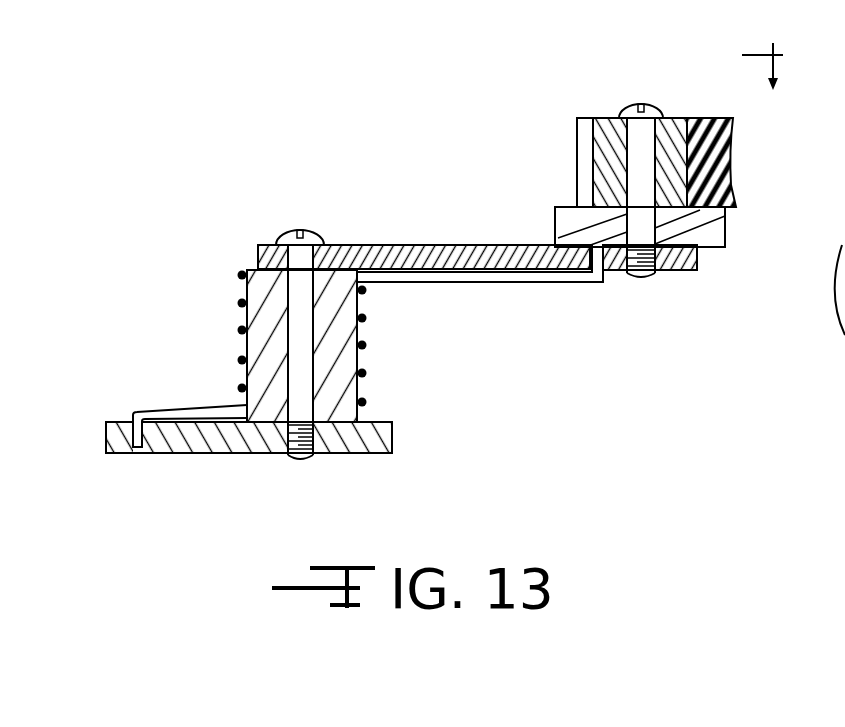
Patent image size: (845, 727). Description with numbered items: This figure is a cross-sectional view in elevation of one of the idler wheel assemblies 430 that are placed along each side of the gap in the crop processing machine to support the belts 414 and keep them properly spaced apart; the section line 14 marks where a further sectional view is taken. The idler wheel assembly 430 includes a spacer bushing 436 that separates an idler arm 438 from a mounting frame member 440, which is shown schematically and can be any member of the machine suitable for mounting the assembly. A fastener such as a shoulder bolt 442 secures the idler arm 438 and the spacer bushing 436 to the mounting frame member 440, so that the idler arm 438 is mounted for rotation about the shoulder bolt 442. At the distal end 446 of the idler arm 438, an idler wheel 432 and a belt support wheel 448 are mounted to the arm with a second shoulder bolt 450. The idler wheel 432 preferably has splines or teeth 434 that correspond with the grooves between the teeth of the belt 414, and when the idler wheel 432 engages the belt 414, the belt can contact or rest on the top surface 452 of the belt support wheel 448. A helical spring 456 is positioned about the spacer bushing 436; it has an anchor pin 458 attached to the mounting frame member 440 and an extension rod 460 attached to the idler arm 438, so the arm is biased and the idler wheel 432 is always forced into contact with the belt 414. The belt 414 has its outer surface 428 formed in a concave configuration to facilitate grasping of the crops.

The section line for FIG. 14 is at (745, 65).
The belt 414 is at (747, 135).
The concave outer surface 428 is at (730, 177).
The idler wheel assembly 430 is at (358, 135).
The idler wheel 432 is at (599, 105).
The splines or teeth 434 is at (577, 143).
The spacer bushing 436 is at (375, 333).
The idler arm 438 is at (462, 232).
The mounting frame member 440 is at (375, 455).
The shoulder bolt 442 is at (300, 460).
The distal end 446 is at (700, 268).
The belt support wheel 448 is at (738, 226).
The shoulder bolt 450 is at (637, 278).
The top surface 452 is at (566, 206).
The helical spring 456 is at (236, 388).
The anchor pin 458 is at (167, 408).
The extension rod 460 is at (560, 283).